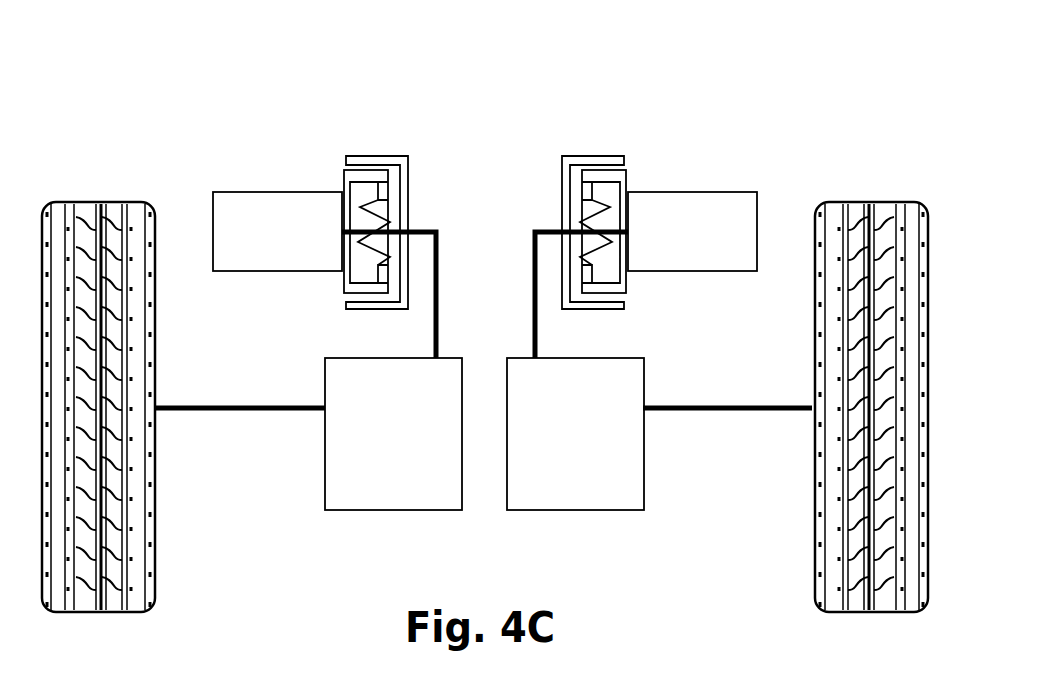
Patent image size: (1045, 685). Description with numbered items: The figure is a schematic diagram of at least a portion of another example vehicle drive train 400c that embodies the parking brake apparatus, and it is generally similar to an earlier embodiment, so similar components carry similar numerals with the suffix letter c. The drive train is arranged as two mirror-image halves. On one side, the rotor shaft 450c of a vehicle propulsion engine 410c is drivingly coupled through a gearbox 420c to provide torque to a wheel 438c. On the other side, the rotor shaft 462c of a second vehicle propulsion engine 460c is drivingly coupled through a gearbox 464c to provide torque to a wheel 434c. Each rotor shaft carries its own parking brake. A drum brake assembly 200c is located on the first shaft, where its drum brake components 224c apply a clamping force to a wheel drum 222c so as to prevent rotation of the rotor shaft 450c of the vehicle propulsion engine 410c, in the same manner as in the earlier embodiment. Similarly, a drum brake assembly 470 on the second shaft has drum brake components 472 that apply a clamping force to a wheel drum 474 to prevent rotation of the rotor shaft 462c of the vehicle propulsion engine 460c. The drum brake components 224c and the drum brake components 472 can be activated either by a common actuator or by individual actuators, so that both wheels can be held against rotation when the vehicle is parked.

The vehicle drive train 400c is at (781, 61).
The drum brake assembly 200c is at (613, 125).
The wheel drum 222c is at (604, 302).
The drum brake components 224c is at (622, 195).
The vehicle propulsion engine 410c is at (735, 193).
The gearbox 420c is at (643, 467).
The wheel 434c is at (156, 545).
The wheel 438c is at (812, 535).
The rotor shaft 450c is at (522, 253).
The vehicle propulsion engine 460c is at (247, 192).
The rotor shaft 462c is at (437, 253).
The gearbox 464c is at (325, 477).
The drum brake assembly 470 is at (381, 122).
The drum brake components 472 is at (378, 197).
The wheel drum 474 is at (374, 303).